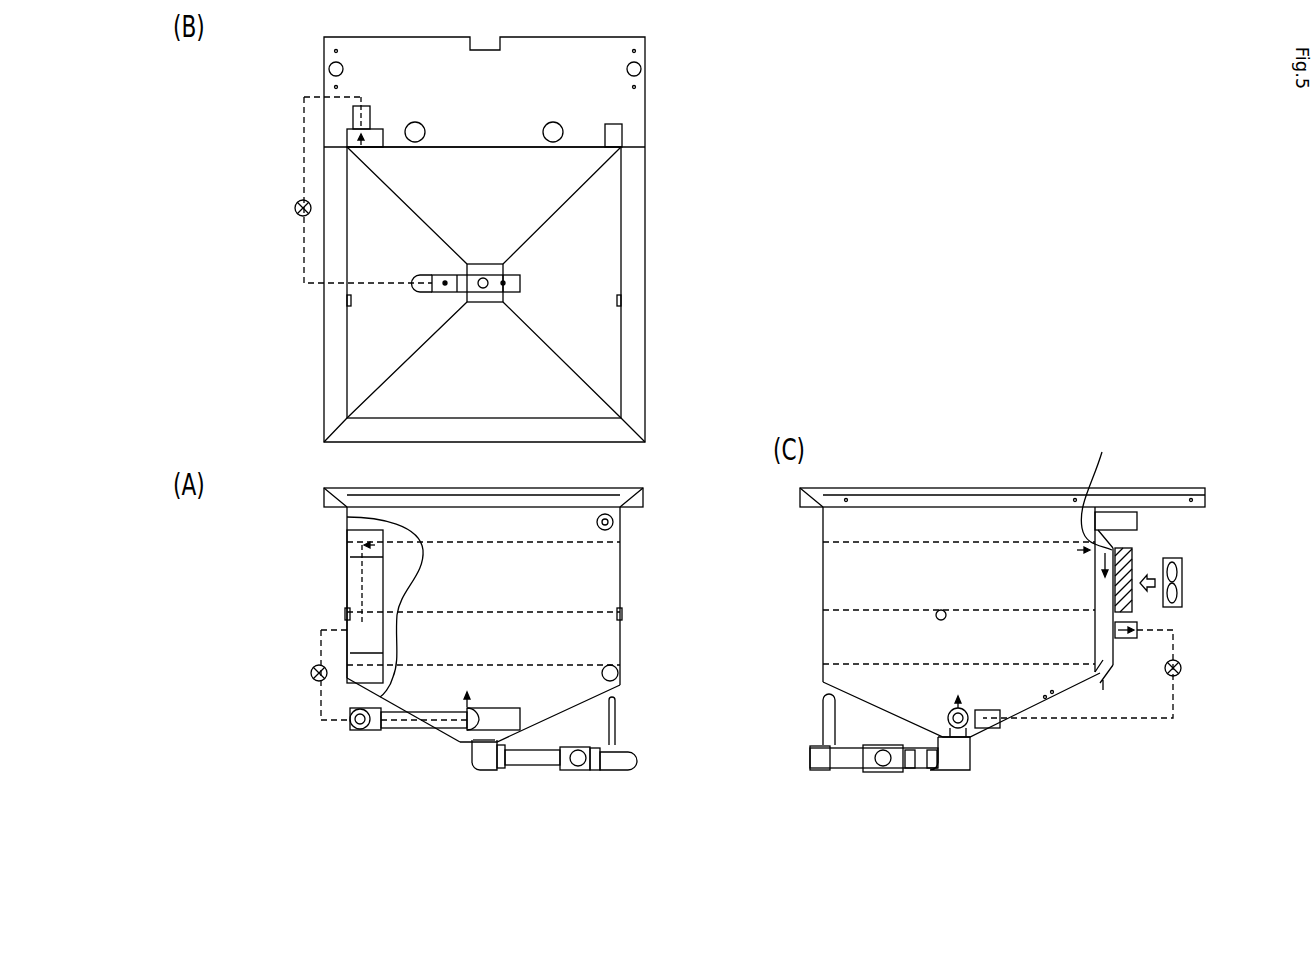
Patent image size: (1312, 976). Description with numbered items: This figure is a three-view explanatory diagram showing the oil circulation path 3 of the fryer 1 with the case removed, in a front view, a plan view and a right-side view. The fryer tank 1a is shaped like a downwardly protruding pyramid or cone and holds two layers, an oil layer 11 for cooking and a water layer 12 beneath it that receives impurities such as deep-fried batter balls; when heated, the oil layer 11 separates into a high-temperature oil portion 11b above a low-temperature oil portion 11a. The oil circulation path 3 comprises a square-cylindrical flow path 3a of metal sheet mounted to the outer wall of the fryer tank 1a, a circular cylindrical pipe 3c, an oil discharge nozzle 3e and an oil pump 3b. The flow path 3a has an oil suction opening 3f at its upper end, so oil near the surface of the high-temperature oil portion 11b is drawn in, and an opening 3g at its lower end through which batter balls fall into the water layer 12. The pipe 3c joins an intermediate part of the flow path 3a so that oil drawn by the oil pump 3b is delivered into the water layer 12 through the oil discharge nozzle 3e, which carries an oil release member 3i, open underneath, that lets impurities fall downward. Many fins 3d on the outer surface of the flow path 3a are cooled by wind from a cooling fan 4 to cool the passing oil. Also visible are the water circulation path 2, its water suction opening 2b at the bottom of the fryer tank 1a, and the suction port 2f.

The fryer 1 is at (300, 48).
The fryer tank 1a is at (612, 198).
The water circulation path 2 is at (527, 770).
The water suction opening 2b is at (487, 288).
The suction port 2f is at (614, 152).
The oil circulation path 3 is at (301, 170).
The square-cylindrical flow path 3a is at (352, 135).
The oil pump 3b is at (298, 215).
The circular cylindrical pipe 3c is at (304, 97).
The fins 3d is at (1133, 564).
The oil discharge nozzle 3e is at (420, 290).
The oil suction opening 3f is at (350, 548).
The opening 3g is at (345, 678).
The oil release member 3i is at (515, 290).
The cooling fan 4 is at (1185, 560).
The oil layer 11 is at (612, 558).
The low-temperature oil portion 11a is at (494, 649).
The high-temperature oil portion 11b is at (487, 584).
The water layer 12 is at (456, 707).